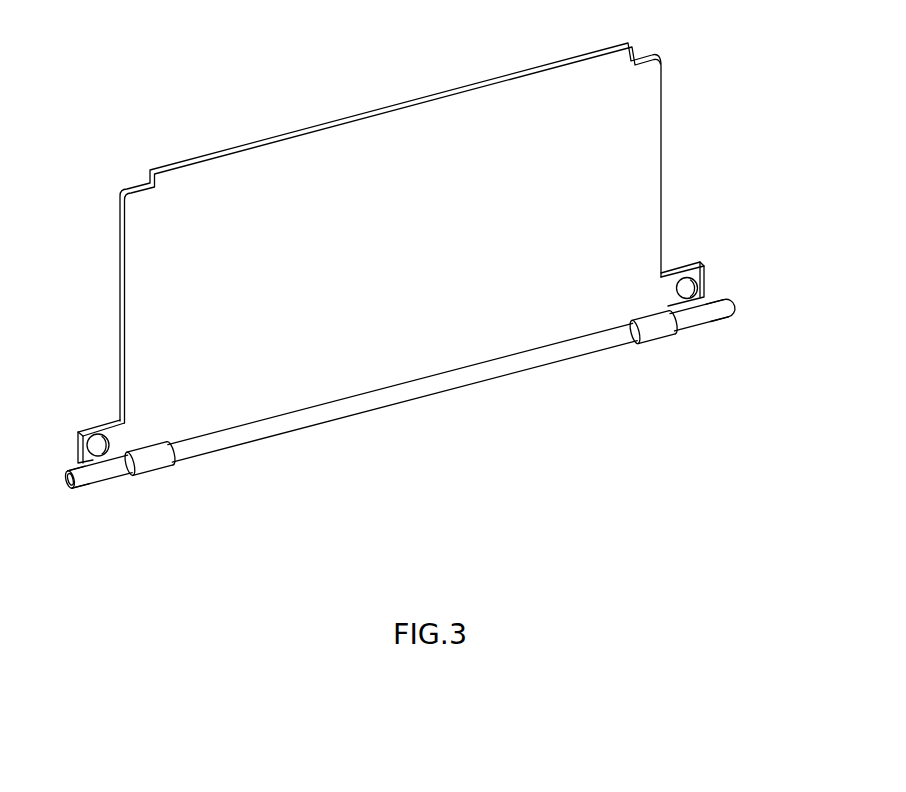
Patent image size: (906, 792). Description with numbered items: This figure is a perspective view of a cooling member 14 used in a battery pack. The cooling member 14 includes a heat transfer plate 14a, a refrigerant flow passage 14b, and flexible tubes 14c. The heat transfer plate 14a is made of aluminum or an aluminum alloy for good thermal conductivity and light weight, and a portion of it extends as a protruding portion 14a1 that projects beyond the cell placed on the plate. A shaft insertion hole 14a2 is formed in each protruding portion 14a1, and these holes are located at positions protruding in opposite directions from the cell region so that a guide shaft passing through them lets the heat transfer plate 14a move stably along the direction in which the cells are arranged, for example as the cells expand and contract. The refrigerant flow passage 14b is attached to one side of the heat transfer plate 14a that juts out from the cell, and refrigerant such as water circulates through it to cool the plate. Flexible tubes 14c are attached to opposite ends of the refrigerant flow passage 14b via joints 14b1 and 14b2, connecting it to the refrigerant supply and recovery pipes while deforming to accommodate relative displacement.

The cooling member 14 is at (354, 99).
The heat transfer plate 14a is at (187, 183).
The protruding portion 14a1 is at (687, 263).
The shaft insertion hole 14a2 is at (689, 292).
The refrigerant flow passage 14b is at (416, 390).
The joint 14b1 is at (152, 460).
The joint 14b2 is at (655, 328).
The flexible tube 14c is at (721, 313).